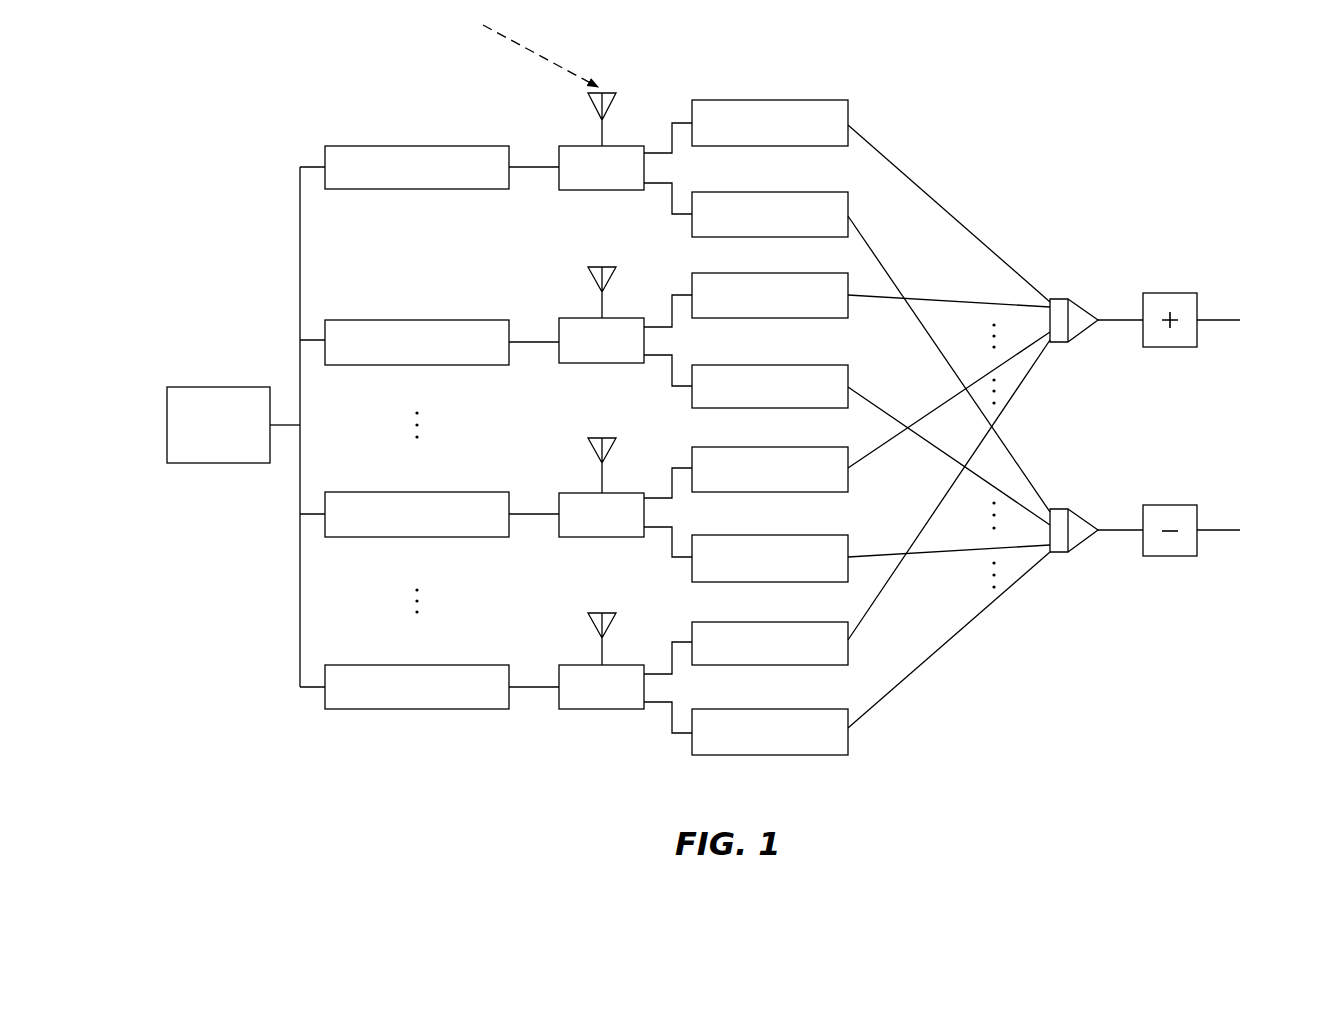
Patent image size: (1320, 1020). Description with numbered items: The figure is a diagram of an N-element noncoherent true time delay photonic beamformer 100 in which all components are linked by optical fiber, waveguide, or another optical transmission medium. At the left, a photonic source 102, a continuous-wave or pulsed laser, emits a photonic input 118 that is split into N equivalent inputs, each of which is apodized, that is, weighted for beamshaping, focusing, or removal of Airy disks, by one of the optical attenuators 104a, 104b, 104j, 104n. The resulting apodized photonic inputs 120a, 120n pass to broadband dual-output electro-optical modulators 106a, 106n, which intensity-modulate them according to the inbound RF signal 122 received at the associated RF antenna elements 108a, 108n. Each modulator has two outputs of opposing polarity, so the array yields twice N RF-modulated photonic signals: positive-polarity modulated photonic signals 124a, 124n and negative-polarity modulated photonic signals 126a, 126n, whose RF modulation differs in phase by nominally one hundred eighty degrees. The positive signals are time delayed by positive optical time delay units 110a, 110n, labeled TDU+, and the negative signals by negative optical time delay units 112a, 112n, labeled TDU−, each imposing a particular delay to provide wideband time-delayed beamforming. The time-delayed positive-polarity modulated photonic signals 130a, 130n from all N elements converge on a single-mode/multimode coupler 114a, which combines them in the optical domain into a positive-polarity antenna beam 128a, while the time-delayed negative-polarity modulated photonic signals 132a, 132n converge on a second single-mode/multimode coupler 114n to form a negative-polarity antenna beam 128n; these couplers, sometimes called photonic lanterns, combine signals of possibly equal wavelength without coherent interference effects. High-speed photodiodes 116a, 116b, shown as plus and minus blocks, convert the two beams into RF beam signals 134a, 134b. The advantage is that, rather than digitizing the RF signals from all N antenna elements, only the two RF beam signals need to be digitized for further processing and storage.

The noncoherent photonic beamformer 100 is at (166, 104).
The photonic source 102 is at (200, 438).
The optical attenuator 104a is at (393, 181).
The optical attenuator 104b is at (393, 356).
The optical attenuator 104j is at (396, 528).
The optical attenuator 104n is at (393, 700).
The electro-optical modulator 106a is at (578, 181).
The electro-optical modulator 106n is at (578, 700).
The RF antenna element 108a is at (590, 100).
The RF antenna element 108n is at (592, 620).
The positive optical time delay unit 110a is at (823, 136).
The positive optical time delay unit 110n is at (823, 657).
The negative optical time delay unit 112a is at (823, 228).
The negative optical time delay unit 112n is at (823, 745).
The single-mode/multimode coupler 114a is at (1060, 298).
The single-mode/multimode coupler 114n is at (1058, 552).
The high-speed photodiode 116a is at (1160, 293).
The high-speed photodiode 116b is at (1160, 556).
The photonic input 118 is at (300, 257).
The apodized photonic input 120a is at (533, 166).
The apodized photonic input 120n is at (533, 686).
The inbound RF signal 122 is at (537, 53).
The positive-polarity modulated photonic signal 124a is at (670, 138).
The positive-polarity modulated photonic signal 124n is at (670, 650).
The negative-polarity modulated photonic signal 126a is at (670, 200).
The negative-polarity modulated photonic signal 126n is at (670, 720).
The positive-polarity antenna beam 128a is at (1113, 320).
The negative-polarity antenna beam 128n is at (1113, 530).
The time-delayed positive-polarity modulated photonic signal 130a is at (903, 170).
The time-delayed positive-polarity modulated photonic signal 130n is at (1027, 375).
The time-delayed negative-polarity modulated photonic signal 132a is at (1035, 483).
The time-delayed negative-polarity modulated photonic signal 132n is at (930, 660).
The RF beam signal 134a is at (1215, 320).
The RF beam signal 134b is at (1215, 530).